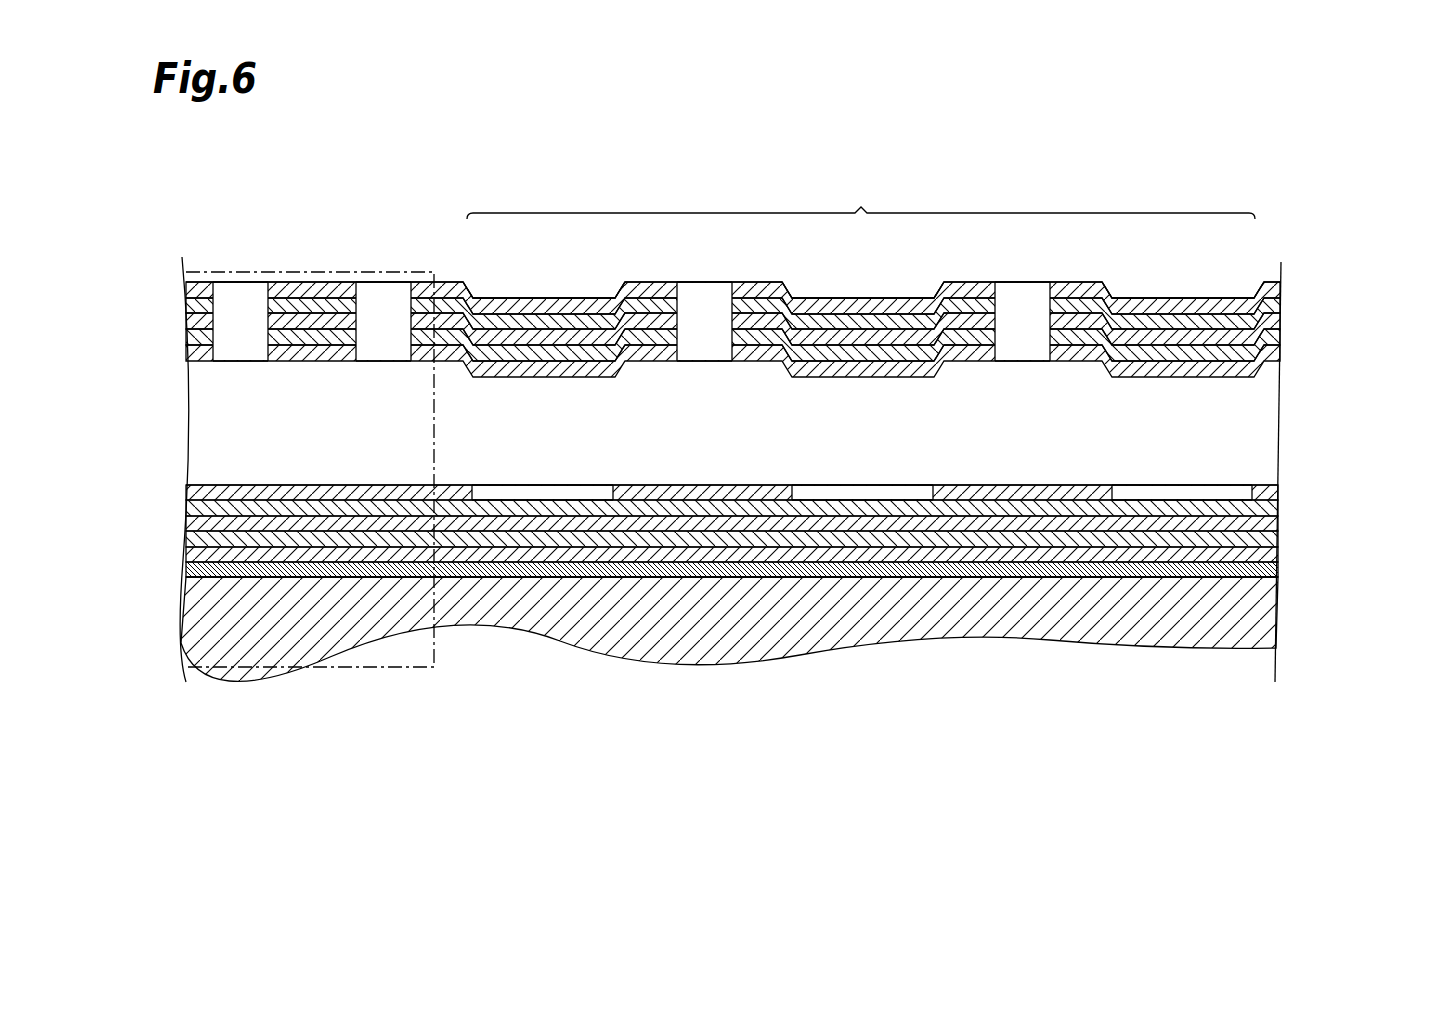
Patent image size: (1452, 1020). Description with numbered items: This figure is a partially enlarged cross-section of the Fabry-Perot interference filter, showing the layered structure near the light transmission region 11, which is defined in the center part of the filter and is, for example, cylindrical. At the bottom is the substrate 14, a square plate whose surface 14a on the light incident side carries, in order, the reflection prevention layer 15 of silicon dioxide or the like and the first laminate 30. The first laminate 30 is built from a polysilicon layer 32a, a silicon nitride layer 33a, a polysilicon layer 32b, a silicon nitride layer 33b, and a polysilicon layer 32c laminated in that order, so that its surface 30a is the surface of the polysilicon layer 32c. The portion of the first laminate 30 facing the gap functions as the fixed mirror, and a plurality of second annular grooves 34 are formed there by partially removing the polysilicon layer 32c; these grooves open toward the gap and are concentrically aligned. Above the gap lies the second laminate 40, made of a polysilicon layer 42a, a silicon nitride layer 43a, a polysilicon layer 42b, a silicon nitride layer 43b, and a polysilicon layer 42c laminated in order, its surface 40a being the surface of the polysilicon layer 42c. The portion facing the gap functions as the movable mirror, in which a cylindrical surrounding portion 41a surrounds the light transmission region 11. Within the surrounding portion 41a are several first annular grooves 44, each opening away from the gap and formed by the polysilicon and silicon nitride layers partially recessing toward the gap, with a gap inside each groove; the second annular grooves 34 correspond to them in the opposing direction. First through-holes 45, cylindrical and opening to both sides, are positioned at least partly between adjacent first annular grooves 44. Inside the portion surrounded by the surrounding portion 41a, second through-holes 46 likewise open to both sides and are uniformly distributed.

The light transmission region 11 is at (293, 270).
The substrate 14 is at (1262, 632).
The surface of the substrate 14a is at (1128, 572).
The reflection prevention layer 15 is at (1252, 572).
The first laminate 30 is at (802, 515).
The surface of the first laminate 30a is at (993, 485).
The polysilicon layer 32a is at (1268, 555).
The polysilicon layer 32b is at (1268, 523).
The polysilicon layer 32c is at (1262, 494).
The silicon nitride layer 33a is at (1268, 539).
The silicon nitride layer 33b is at (1266, 510).
The second annular groove 34 is at (474, 494).
The second laminate 40 is at (802, 287).
The surface of the second laminate 40a is at (955, 282).
The surrounding portion 41a is at (861, 200).
The polysilicon layer 42a is at (1272, 366).
The polysilicon layer 42b is at (1270, 321).
The polysilicon layer 42c is at (1272, 289).
The silicon nitride layer 43a is at (1270, 337).
The silicon nitride layer 43b is at (1268, 308).
The first annular groove 44 is at (476, 292).
The first through-hole 45 is at (682, 318).
The second through-hole 46 is at (215, 318).